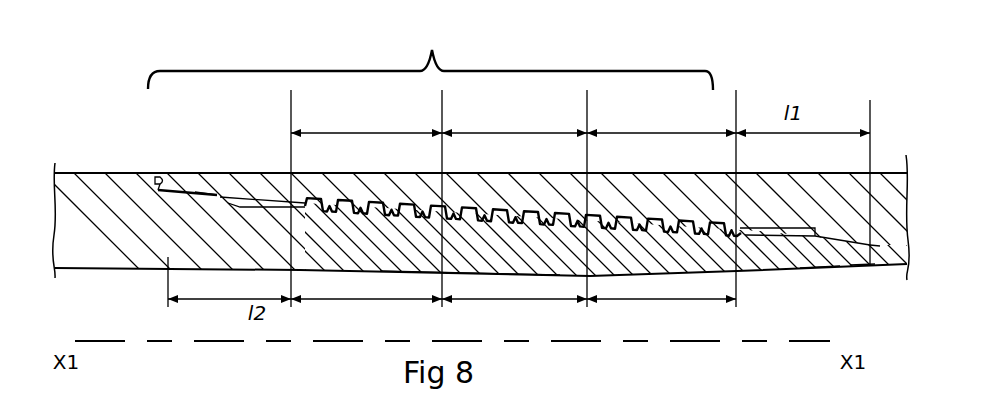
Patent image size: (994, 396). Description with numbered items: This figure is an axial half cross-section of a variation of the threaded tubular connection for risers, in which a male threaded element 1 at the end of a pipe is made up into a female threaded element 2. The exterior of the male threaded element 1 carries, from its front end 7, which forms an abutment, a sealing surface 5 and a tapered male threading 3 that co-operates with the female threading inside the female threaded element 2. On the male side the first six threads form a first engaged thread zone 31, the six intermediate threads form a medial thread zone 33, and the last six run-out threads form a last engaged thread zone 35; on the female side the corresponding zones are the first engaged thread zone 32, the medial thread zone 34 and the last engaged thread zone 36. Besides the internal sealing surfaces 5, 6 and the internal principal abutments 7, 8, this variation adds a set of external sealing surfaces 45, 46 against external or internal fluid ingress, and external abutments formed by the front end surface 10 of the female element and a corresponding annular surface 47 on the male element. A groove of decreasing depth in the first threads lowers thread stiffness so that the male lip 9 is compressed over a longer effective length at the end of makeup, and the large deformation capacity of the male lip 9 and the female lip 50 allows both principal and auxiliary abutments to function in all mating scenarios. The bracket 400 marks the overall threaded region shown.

The male threaded element 1 is at (407, 258).
The female threaded element 2 is at (376, 158).
The male threading 3 is at (438, 215).
The threaded section 400 is at (430, 57).
The first engaged thread zone 31 is at (661, 312).
The first engaged thread zone 32 is at (366, 122).
The medial thread zone 33 is at (514, 312).
The medial thread zone 34 is at (514, 122).
The last engaged thread zone 35 is at (366, 310).
The last engaged thread zone 36 is at (661, 123).
The front end 10 is at (152, 177).
The external sealing surface 45 is at (198, 197).
The external sealing surface 46 is at (187, 189).
The annular surface 47 is at (165, 184).
The female lip 50 is at (198, 192).
The sealing surface 5 is at (869, 232).
The sealing surface 6 is at (820, 267).
The front end 7 is at (883, 243).
The abutment 8 is at (858, 263).
The male lip 9 is at (789, 222).